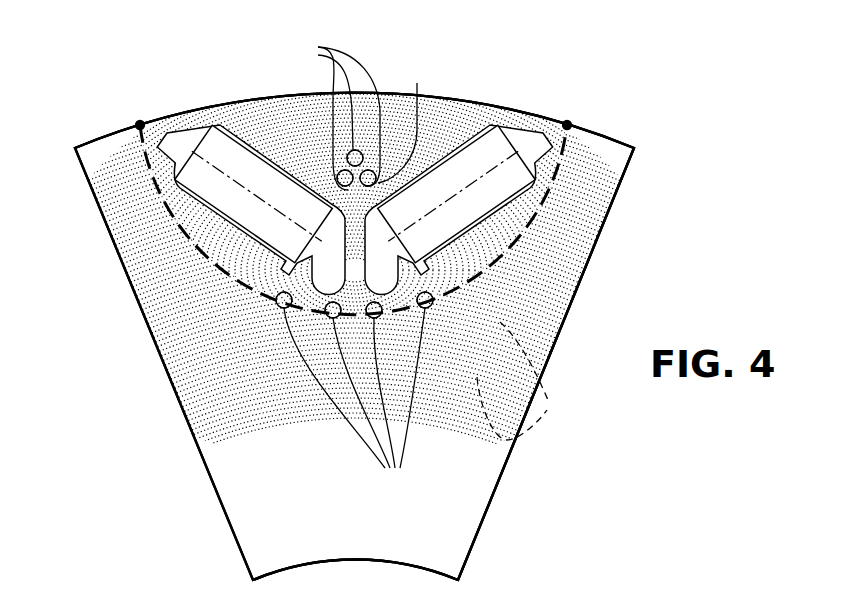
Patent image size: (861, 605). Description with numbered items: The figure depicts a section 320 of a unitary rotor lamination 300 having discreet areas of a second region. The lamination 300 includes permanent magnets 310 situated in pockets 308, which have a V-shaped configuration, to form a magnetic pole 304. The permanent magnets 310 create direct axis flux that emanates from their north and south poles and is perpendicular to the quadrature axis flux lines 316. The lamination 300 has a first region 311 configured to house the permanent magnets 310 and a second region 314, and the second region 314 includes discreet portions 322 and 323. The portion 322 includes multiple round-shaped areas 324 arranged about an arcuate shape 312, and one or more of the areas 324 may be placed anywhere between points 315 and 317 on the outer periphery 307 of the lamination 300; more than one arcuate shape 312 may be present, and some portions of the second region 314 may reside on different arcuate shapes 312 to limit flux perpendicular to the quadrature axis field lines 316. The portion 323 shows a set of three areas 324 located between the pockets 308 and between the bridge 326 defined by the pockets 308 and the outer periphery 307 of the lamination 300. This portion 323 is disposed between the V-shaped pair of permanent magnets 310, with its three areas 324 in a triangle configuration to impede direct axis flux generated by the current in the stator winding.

The unitary lamination 300 is at (562, 44).
The section 320 is at (354, 336).
The magnetic pole 304 is at (390, 80).
The outer periphery 307 is at (92, 143).
The pockets 308 is at (194, 154).
The permanent magnets 310 is at (240, 140).
The first region 311 is at (262, 538).
The arcuate shape 312 is at (596, 132).
The second region 314 is at (340, 271).
The point 315 is at (140, 125).
The quadrature axis flux lines 316 is at (540, 403).
The point 317 is at (567, 125).
The portion 322 is at (354, 305).
The portion 323 is at (356, 168).
The round-shaped areas 324 is at (163, 415).
The bridge 326 is at (357, 258).